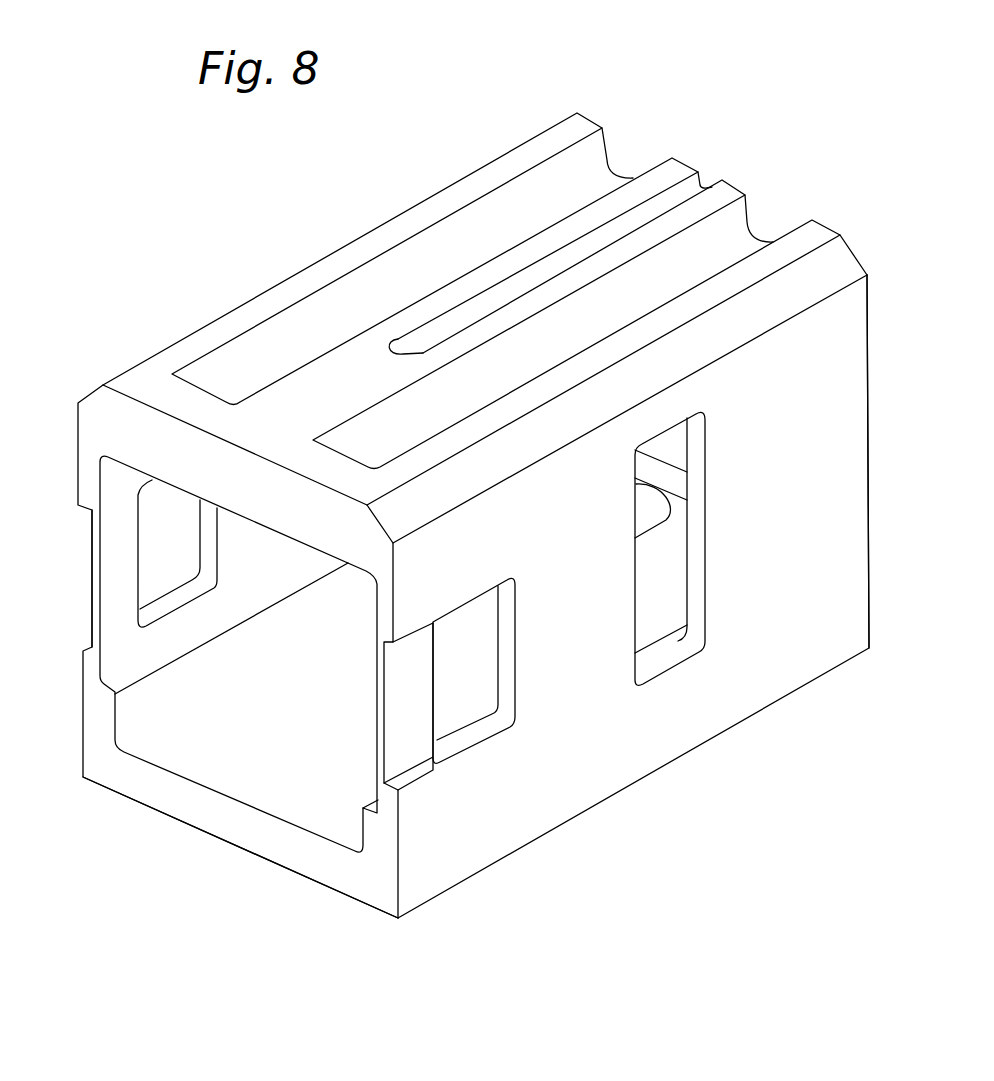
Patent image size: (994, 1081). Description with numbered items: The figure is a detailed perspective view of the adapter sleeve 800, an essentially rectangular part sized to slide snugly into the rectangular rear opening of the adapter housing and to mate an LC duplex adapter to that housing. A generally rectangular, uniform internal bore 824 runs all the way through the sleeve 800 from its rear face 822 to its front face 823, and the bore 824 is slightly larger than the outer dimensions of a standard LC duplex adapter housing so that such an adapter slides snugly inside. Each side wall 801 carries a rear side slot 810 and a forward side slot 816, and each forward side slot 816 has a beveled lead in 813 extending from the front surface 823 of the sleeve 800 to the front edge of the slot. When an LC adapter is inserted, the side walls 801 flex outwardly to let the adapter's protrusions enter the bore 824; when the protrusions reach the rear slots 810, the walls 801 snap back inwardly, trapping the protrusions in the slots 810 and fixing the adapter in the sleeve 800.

The adapter sleeve 800 is at (256, 216).
The side walls 801 is at (818, 378).
The rear side slot 810 is at (676, 555).
The beveled lead in 813 is at (86, 621).
The forward side slot 816 is at (182, 552).
The rear face 822 is at (878, 628).
The front face 823 is at (276, 846).
The internal bore 824 is at (243, 664).